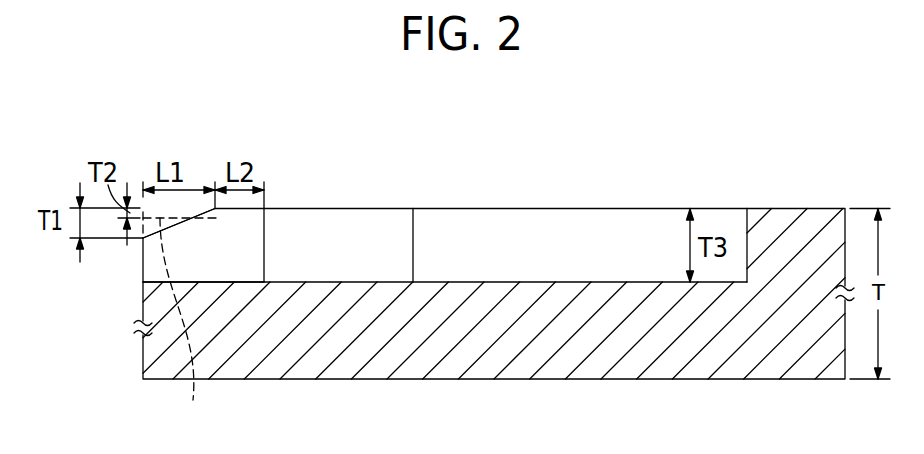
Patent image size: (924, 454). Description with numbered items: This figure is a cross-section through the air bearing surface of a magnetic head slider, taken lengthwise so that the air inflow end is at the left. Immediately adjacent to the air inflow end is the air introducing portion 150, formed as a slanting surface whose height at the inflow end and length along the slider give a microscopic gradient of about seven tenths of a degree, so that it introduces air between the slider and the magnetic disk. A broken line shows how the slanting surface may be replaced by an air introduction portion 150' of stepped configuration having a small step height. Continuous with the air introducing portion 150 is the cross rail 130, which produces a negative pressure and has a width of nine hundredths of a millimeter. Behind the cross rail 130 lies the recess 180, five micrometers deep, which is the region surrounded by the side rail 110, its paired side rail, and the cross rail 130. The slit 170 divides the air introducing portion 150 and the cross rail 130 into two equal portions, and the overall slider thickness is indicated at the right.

The side rail 110 is at (453, 208).
The cross rail 130 is at (267, 208).
The air introducing portion 150 is at (185, 167).
The air introduction portion 150' is at (192, 329).
The slit 170 is at (243, 263).
The recess 180 is at (565, 238).